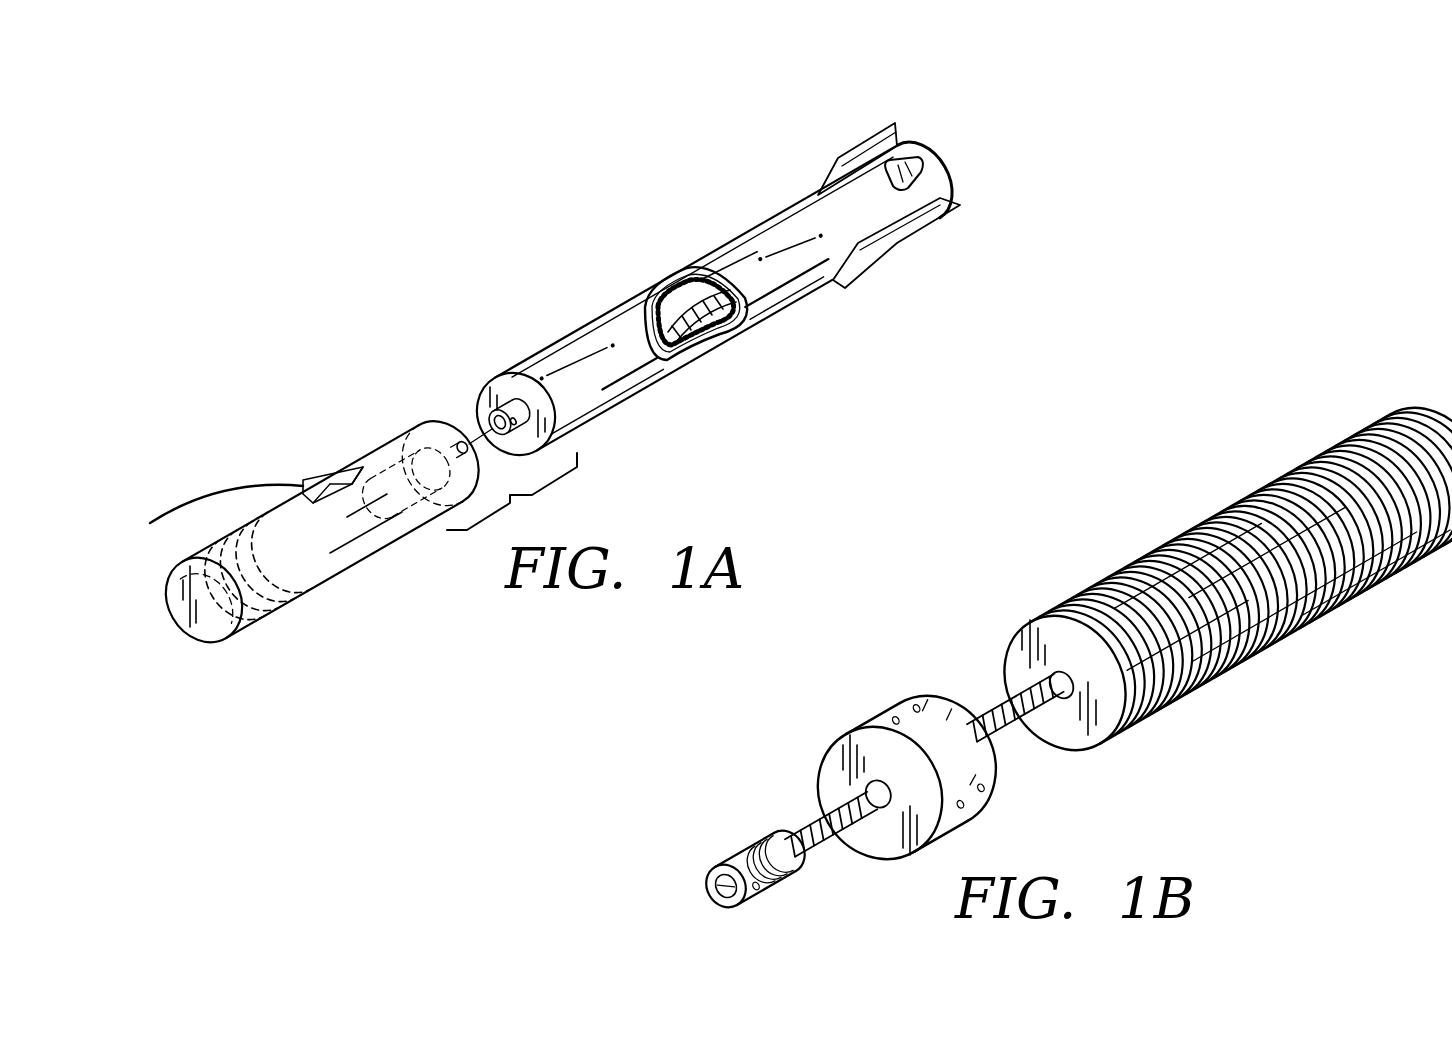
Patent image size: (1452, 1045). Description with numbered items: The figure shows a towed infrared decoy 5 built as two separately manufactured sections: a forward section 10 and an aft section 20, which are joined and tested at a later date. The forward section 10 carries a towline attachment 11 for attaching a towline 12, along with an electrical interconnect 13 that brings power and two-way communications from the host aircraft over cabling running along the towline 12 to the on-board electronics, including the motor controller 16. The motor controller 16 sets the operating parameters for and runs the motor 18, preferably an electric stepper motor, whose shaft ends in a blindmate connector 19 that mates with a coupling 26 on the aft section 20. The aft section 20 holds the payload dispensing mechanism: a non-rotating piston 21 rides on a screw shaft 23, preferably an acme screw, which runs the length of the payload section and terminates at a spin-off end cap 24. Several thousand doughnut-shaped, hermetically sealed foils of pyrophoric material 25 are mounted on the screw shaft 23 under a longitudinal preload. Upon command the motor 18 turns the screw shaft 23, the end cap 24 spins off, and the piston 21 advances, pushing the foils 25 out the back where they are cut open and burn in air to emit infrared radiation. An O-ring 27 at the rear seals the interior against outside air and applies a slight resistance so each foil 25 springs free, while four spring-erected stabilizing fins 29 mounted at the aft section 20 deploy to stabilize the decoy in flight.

In FIG. 1A, the decoy 5 is at (403, 292).
In FIG. 1A, the forward section 10 is at (370, 574).
In FIG. 1A, the towline attachment 11 is at (313, 477).
In FIG. 1A, the towline 12 is at (198, 500).
In FIG. 1A, the electrical interconnect 13 is at (348, 466).
In FIG. 1A, the motor controller 16 is at (281, 607).
In FIG. 1A, the motor 18 is at (413, 426).
In FIG. 1A, the blindmate connector 19 is at (461, 440).
In FIG. 1A, the aft section 20 is at (583, 307).
In FIG. 1B, the non-rotating piston 21 is at (882, 712).
In FIG. 1A, the screw shaft 23 is at (679, 351).
In FIG. 1B, the screw shaft 23 is at (983, 717).
In FIG. 1A, the end cap 24 is at (938, 173).
In FIG. 1A, the pyrophoric material 25 is at (745, 330).
In FIG. 1B, the pyrophoric material 25 is at (1127, 545).
In FIG. 1A, the coupling 26 is at (502, 405).
In FIG. 1B, the coupling 26 is at (733, 855).
In FIG. 1A, the O-ring 27 is at (905, 158).
In FIG. 1A, the stabilizing fins 29 is at (934, 223).